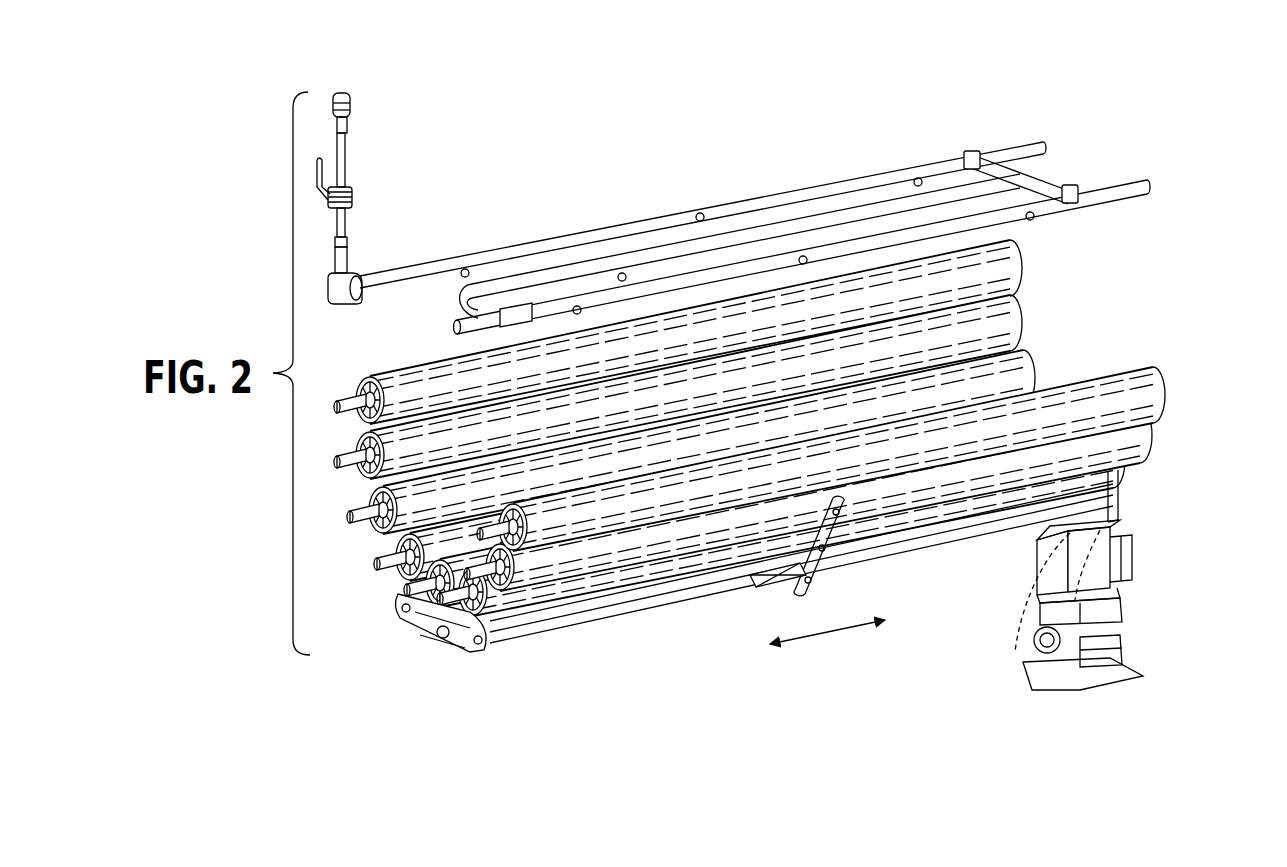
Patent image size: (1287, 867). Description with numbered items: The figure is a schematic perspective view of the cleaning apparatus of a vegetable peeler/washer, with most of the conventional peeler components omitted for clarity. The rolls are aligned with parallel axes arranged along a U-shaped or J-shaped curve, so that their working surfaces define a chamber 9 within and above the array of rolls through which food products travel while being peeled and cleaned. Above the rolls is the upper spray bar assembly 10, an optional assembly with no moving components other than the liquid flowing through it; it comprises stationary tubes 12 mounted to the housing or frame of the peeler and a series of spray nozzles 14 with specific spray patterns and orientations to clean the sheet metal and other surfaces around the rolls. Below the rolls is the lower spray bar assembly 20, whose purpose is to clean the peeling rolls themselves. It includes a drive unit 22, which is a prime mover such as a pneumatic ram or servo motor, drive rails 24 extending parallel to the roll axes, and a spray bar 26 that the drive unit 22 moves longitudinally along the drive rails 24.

The upper spray bar assembly 10 is at (963, 132).
The stationary tubes 12 is at (612, 228).
The spray nozzles 14 is at (1040, 232).
The chamber 9 is at (988, 385).
The lower spray bar assembly 20 is at (405, 658).
The drive unit 22 is at (1145, 558).
The drive rails 24 is at (995, 550).
The spray bar 26 is at (785, 602).